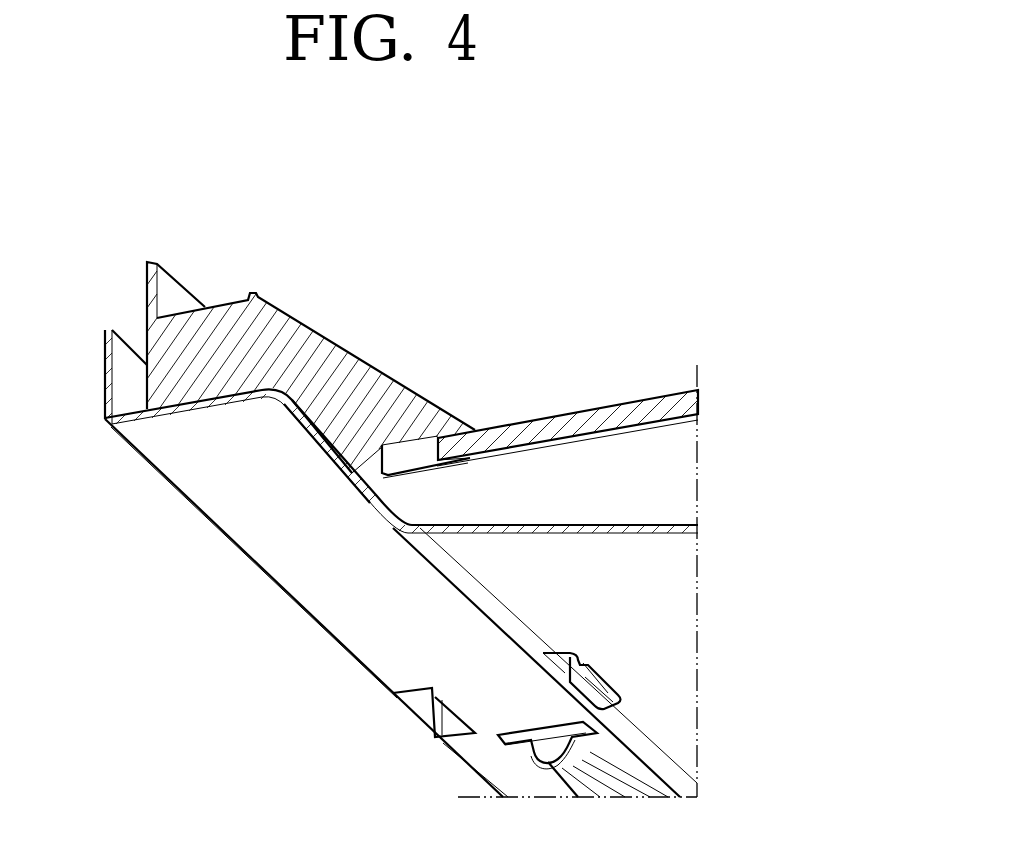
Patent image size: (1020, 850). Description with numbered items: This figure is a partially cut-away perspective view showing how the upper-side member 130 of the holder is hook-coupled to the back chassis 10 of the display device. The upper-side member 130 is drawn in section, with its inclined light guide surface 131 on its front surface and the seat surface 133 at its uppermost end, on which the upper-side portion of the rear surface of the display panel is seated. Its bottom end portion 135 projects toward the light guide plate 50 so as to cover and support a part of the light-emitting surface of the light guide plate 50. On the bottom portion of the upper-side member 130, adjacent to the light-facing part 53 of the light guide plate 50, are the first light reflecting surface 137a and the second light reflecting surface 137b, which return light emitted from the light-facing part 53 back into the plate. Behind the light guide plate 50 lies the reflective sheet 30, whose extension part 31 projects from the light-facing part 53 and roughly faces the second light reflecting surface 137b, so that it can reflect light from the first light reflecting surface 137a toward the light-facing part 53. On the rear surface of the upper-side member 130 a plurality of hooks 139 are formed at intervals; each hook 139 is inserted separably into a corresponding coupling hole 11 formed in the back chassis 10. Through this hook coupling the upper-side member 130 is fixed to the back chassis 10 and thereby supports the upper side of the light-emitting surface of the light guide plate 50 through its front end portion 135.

The back chassis 10 is at (675, 592).
The coupling hole 11 is at (563, 663).
The reflective sheet 30 is at (407, 478).
The extension part 31 is at (393, 528).
The light guide plate 50 is at (590, 392).
The light-facing part 53 is at (540, 483).
The upper-side member 130 is at (454, 447).
The light guide surface 131 is at (338, 340).
The seat surface 133 is at (212, 297).
The bottom end portion 135 is at (453, 418).
The first light reflecting surface 137a is at (380, 503).
The second light reflecting surface 137b is at (417, 435).
The hook 139 is at (599, 686).